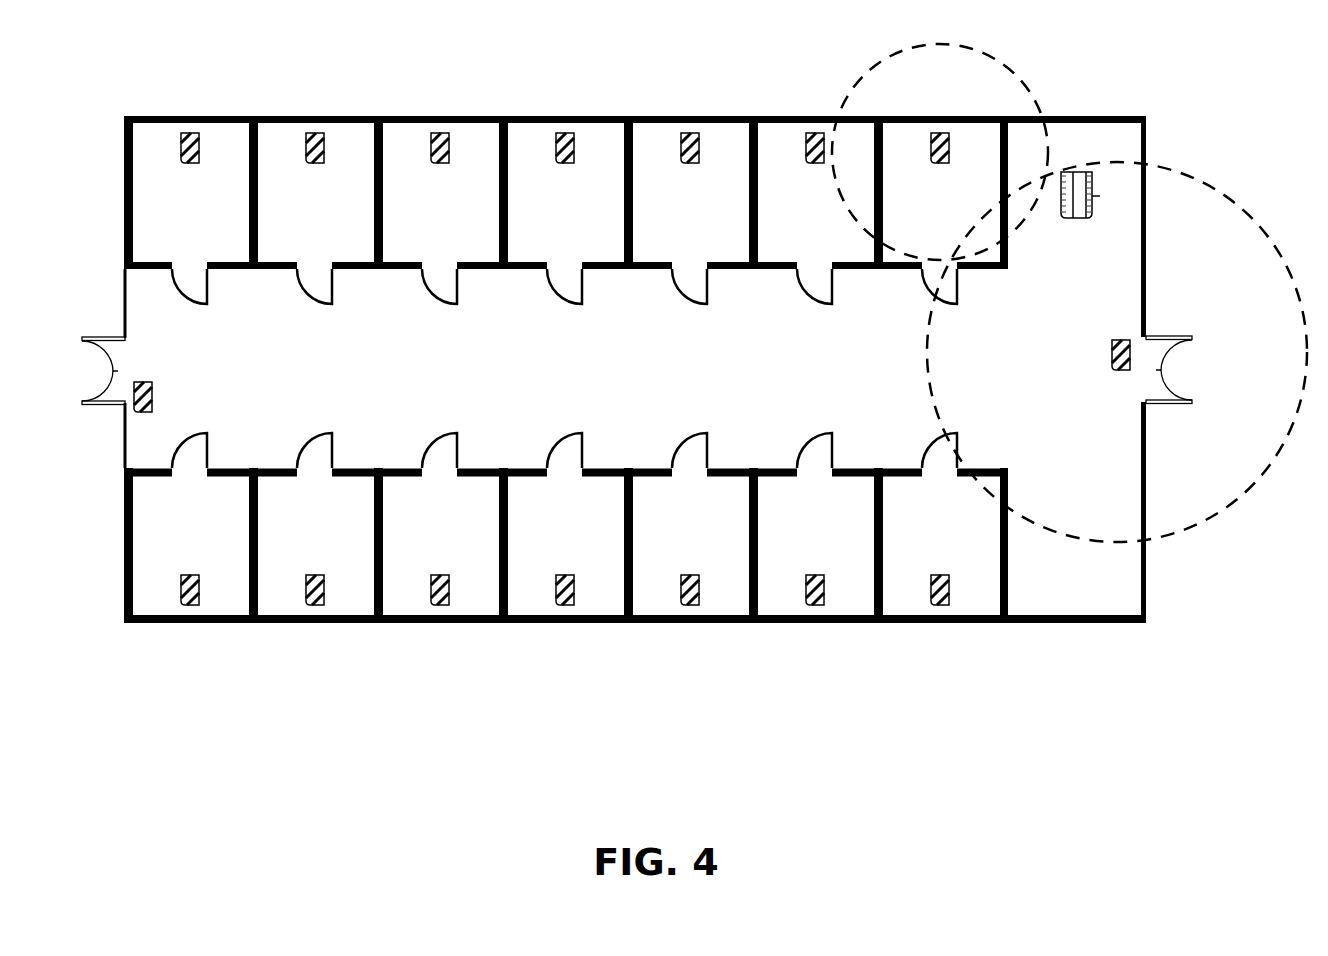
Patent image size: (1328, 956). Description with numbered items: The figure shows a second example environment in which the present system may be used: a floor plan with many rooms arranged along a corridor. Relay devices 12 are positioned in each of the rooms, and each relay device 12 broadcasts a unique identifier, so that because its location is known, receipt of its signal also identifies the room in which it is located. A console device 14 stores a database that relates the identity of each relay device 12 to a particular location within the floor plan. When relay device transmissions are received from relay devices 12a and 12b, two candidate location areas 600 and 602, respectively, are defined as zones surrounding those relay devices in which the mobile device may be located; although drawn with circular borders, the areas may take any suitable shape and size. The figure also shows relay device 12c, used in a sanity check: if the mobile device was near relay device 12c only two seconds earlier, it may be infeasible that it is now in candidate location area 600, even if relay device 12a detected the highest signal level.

The relay device 12 is at (872, 716).
The relay device 12a is at (953, 147).
The relay device 12b is at (1128, 340).
The relay device 12c is at (942, 605).
The console device 14 is at (1092, 177).
The candidate location area 600 is at (1017, 80).
The candidate location area 602 is at (1243, 208).